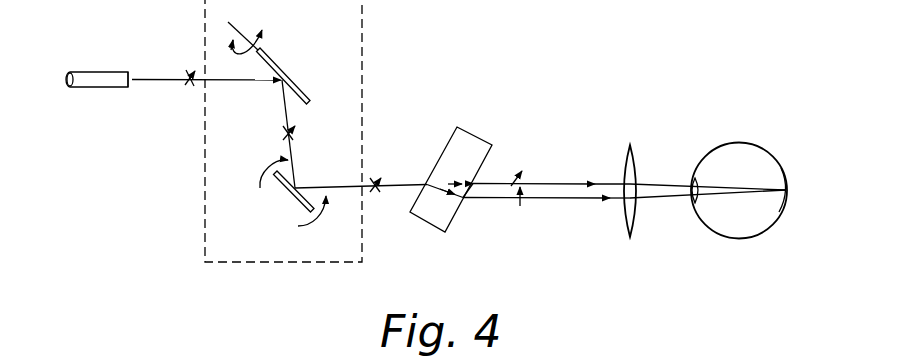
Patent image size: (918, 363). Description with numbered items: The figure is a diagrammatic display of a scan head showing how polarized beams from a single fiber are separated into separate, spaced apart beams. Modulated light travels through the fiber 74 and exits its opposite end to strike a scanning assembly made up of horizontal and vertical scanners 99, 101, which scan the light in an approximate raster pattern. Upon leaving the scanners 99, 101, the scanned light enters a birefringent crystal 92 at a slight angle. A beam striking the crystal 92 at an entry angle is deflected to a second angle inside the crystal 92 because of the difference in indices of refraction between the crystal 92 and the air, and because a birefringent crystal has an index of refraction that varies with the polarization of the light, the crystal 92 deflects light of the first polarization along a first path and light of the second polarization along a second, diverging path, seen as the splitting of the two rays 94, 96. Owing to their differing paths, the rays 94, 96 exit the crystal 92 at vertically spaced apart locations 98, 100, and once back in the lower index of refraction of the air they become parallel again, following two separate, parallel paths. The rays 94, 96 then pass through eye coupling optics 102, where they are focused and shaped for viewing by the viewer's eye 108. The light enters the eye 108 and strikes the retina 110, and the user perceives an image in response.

The fiber 74 is at (93, 88).
The horizontal scanner 99 is at (290, 70).
The vertical scanner 101 is at (290, 202).
The birefringent crystal 92 is at (467, 127).
The exit location 98 is at (473, 183).
The exit location 100 is at (463, 200).
The ray 94 is at (567, 184).
The ray 96 is at (560, 199).
The eye coupling optics 102 is at (632, 150).
The eye 108 is at (723, 238).
The retina 110 is at (781, 176).